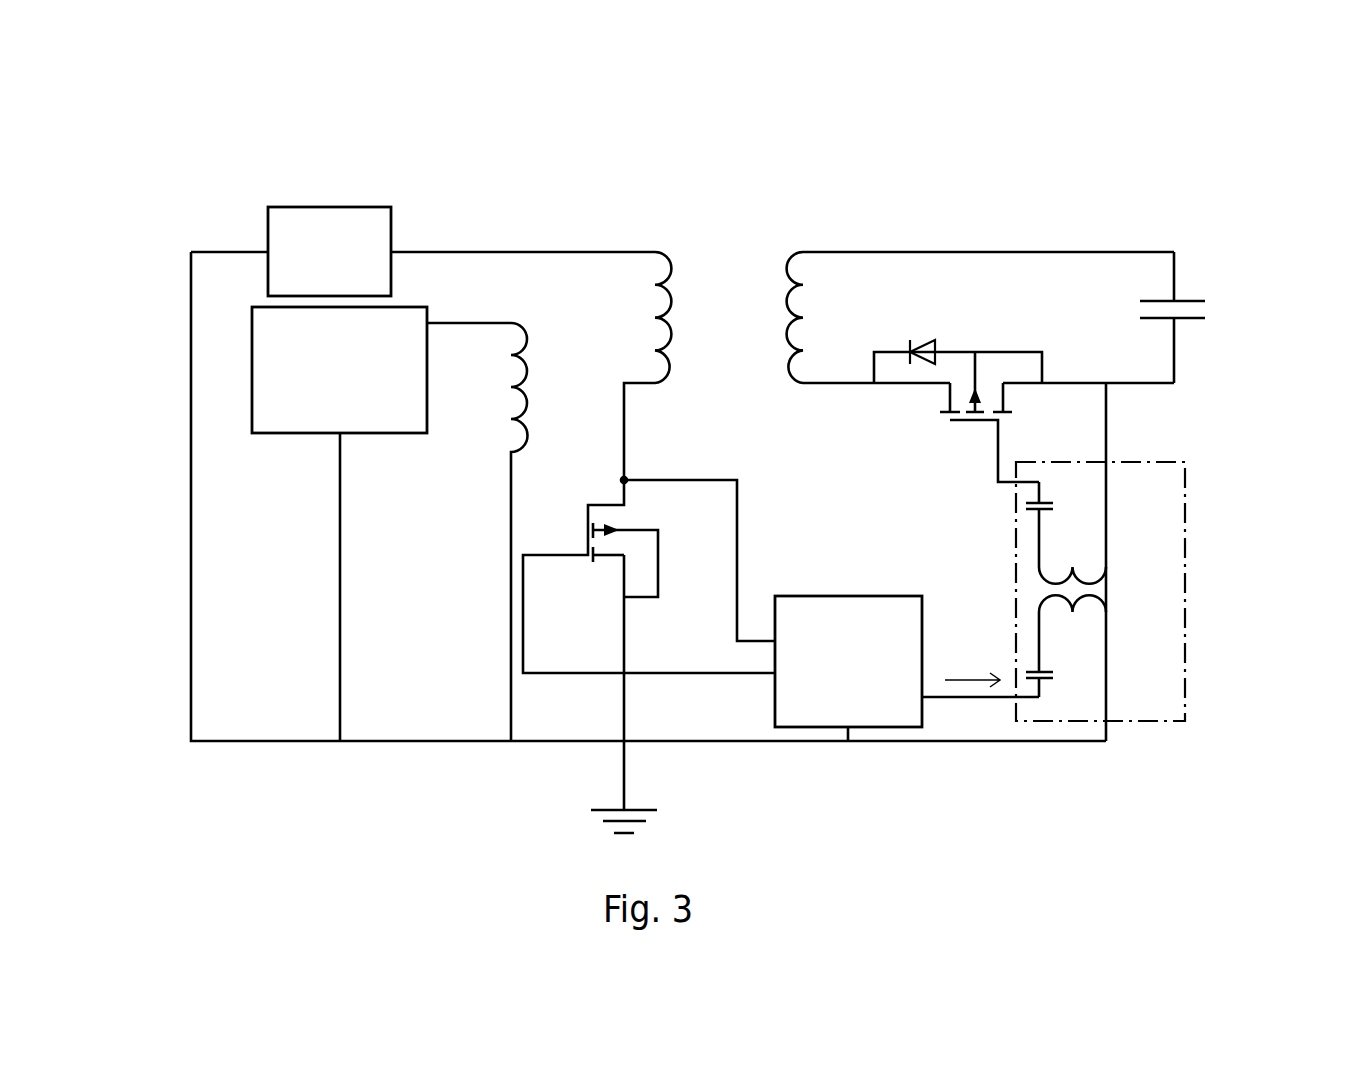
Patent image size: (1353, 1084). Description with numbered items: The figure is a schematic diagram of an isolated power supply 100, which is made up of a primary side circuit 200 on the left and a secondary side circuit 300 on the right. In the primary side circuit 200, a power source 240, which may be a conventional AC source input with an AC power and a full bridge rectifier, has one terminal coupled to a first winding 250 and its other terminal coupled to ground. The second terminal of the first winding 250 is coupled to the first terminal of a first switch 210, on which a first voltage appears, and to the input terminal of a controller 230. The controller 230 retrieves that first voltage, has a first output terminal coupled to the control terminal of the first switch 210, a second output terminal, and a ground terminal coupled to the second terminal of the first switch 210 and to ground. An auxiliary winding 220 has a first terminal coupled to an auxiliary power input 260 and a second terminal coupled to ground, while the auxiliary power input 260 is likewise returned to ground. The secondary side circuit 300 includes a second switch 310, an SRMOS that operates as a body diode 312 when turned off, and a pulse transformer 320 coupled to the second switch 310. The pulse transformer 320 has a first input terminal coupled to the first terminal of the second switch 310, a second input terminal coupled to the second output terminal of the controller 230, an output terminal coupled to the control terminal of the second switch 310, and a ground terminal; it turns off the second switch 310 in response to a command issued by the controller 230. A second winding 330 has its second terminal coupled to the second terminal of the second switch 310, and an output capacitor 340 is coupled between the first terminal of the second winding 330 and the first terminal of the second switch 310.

The isolated power supply 100 is at (146, 117).
The primary side circuit 200 is at (442, 183).
The secondary side circuit 300 is at (1023, 182).
The first switch 210 is at (590, 568).
The auxiliary winding 220 is at (498, 433).
The controller 230 is at (843, 596).
The power source 240 is at (328, 207).
The first winding 250 is at (666, 250).
The auxiliary power input 260 is at (288, 435).
The second switch 310 is at (965, 427).
The body diode 312 is at (926, 338).
The pulse transformer 320 is at (1188, 553).
The second winding 330 is at (792, 250).
The output capacitor 340 is at (1195, 300).